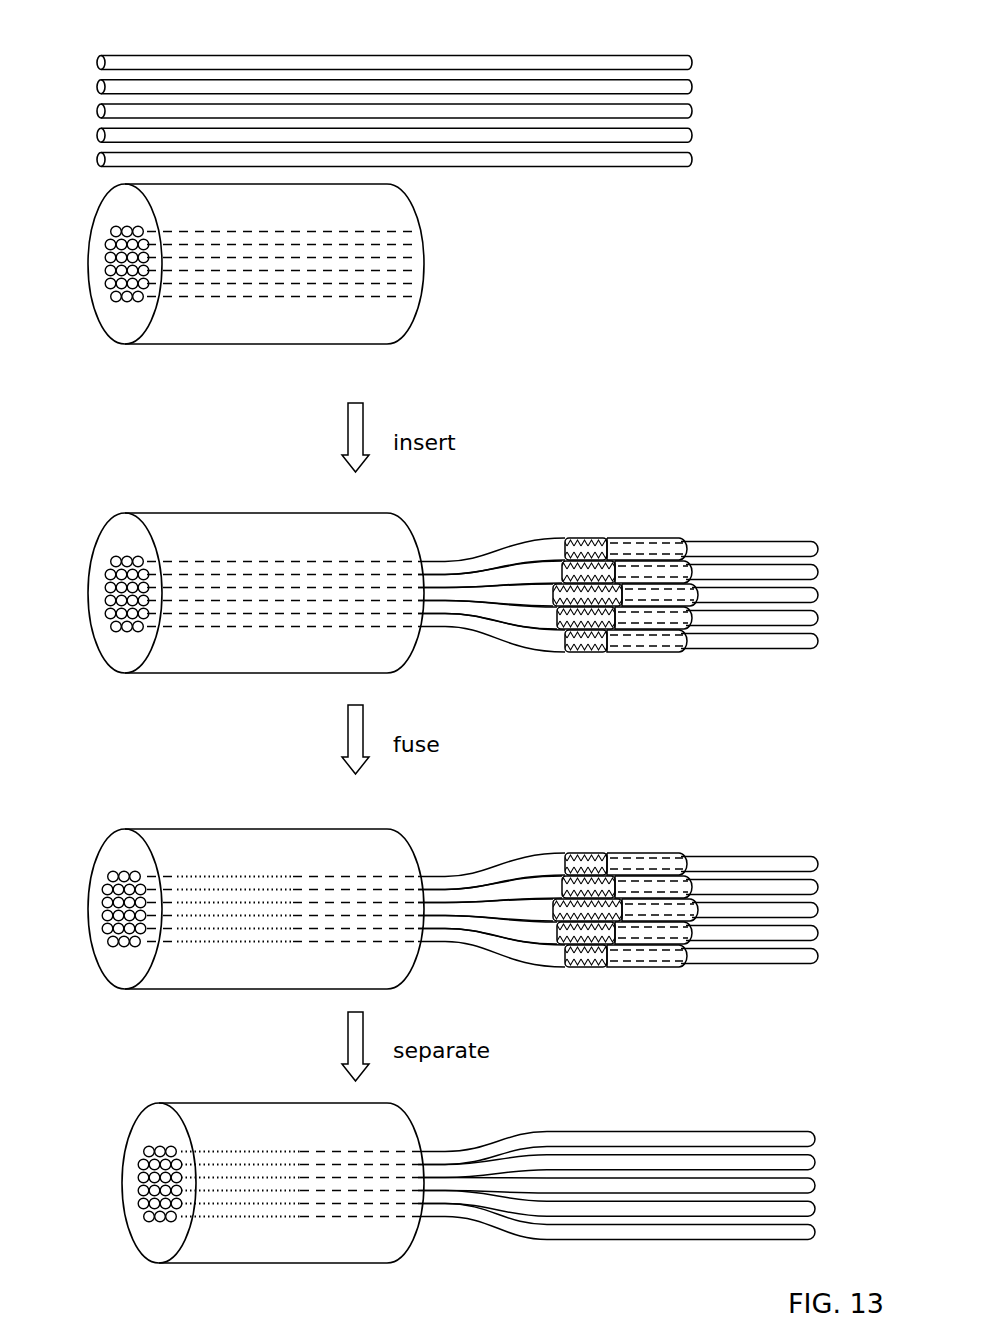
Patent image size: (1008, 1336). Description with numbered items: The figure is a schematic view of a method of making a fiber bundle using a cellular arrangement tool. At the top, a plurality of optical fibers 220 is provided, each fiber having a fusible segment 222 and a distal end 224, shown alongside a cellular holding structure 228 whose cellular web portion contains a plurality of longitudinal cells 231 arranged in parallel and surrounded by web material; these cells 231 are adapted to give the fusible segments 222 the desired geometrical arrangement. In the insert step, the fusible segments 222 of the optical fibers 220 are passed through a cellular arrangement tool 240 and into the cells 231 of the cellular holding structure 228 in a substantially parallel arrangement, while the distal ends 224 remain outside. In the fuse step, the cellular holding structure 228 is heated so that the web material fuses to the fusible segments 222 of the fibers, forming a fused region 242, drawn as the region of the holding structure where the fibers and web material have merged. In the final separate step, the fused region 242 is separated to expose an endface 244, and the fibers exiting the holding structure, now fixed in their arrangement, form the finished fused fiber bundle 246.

The optical fibers 220 is at (547, 155).
The fusible segment 222 is at (273, 37).
The distal end 224 is at (690, 63).
The cellular holding structure 228 is at (388, 323).
The longitudinal cells 231 is at (368, 269).
The cellular arrangement tool 240 is at (627, 535).
The fused region 242 is at (273, 814).
The endface 244 is at (82, 1173).
The fused fiber bundle 246 is at (552, 1098).